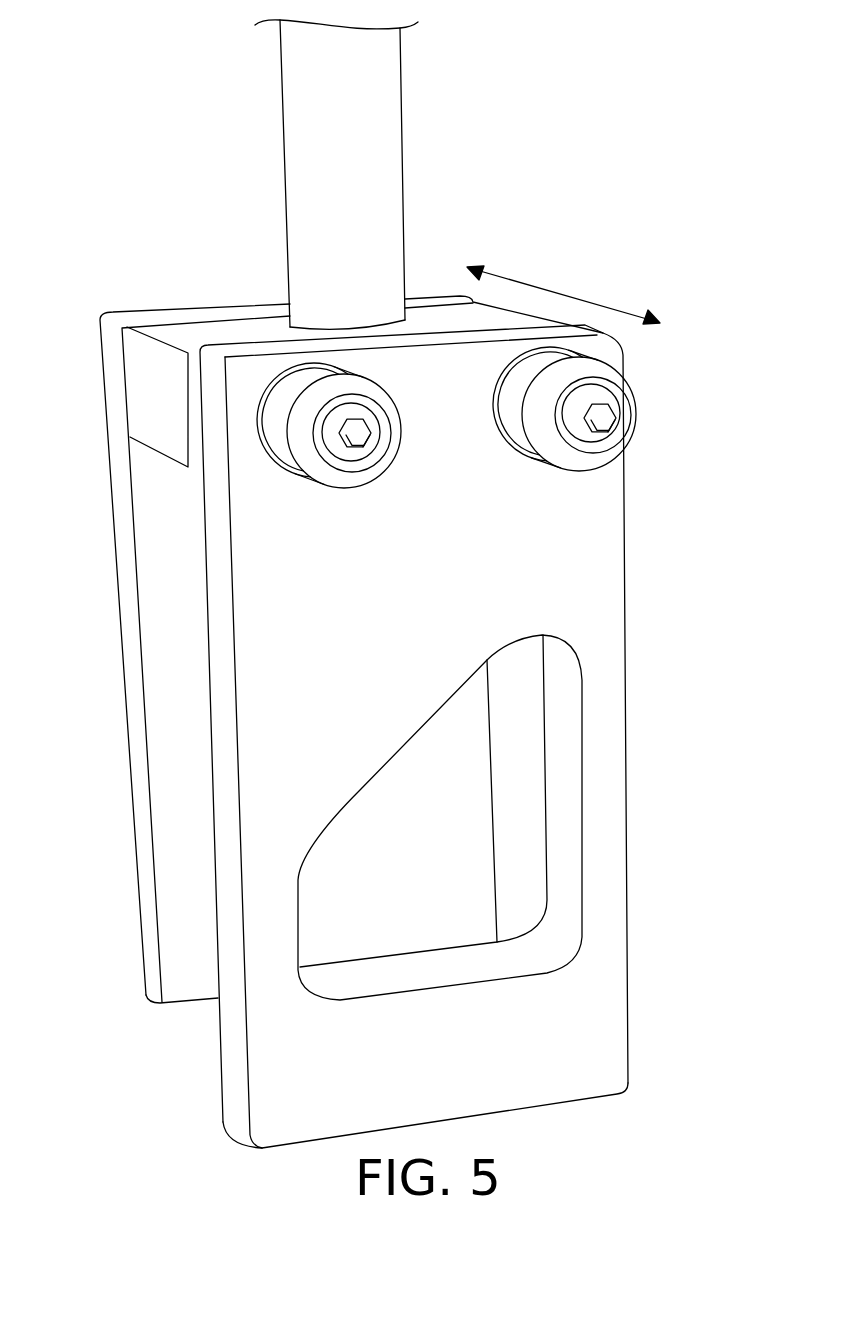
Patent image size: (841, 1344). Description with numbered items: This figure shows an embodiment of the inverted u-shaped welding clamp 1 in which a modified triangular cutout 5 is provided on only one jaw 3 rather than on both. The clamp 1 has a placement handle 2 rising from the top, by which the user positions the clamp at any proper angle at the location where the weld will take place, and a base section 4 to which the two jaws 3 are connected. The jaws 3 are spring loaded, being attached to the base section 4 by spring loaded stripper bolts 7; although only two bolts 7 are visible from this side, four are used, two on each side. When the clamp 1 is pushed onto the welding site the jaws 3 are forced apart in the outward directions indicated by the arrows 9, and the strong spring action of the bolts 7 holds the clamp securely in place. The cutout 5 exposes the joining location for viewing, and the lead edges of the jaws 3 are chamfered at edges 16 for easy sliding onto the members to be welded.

The clamp 1 is at (371, 585).
The placement handle 2 is at (377, 143).
The jaws 3 is at (128, 598).
The base section 4 is at (148, 383).
The modified triangular cutout 5 is at (525, 810).
The spring loaded stripper bolts 7 is at (390, 418).
The arrows 9 is at (555, 292).
The chamfered edges 16 is at (157, 1002).